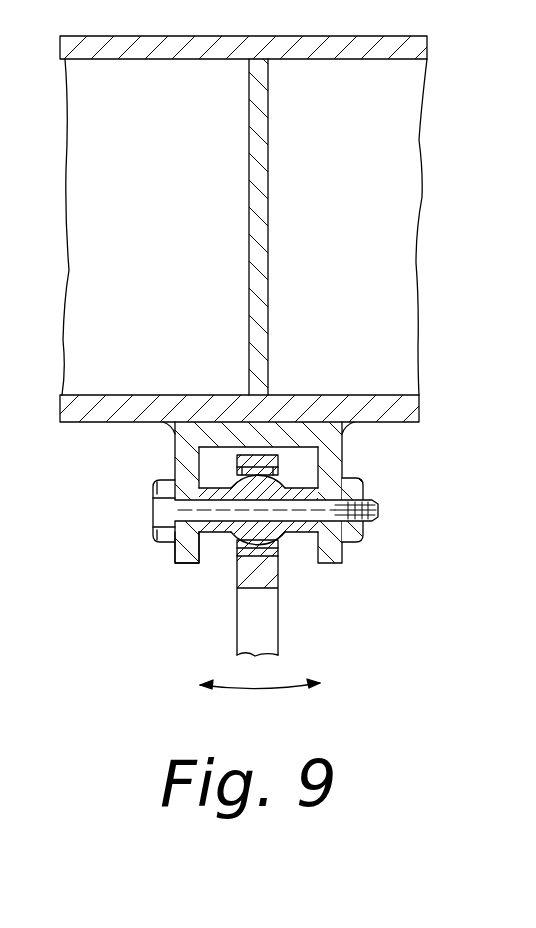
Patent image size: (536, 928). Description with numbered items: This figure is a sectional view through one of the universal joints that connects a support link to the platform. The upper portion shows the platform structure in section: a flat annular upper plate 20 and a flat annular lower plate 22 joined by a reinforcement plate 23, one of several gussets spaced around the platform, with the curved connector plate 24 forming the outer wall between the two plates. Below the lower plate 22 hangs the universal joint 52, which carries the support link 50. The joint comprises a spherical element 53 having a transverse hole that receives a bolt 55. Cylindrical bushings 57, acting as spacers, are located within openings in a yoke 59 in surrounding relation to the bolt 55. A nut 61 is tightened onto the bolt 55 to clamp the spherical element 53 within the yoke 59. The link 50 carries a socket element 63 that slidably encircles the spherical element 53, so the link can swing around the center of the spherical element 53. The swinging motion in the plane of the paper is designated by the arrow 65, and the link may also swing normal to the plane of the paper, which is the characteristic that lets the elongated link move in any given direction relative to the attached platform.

The upper plate 20 is at (182, 42).
The lower plate 22 is at (105, 412).
The reinforcement plate 23 is at (265, 253).
The connector plate 24 is at (105, 190).
The support link 50 is at (270, 630).
The universal joint 52 is at (235, 532).
The spherical element 53 is at (278, 556).
The bolt 55 is at (158, 512).
The cylindrical bushing 57 is at (190, 492).
The yoke 59 is at (180, 557).
The nut 61 is at (360, 538).
The socket element 63 is at (258, 472).
The swinging motion 65 is at (277, 689).